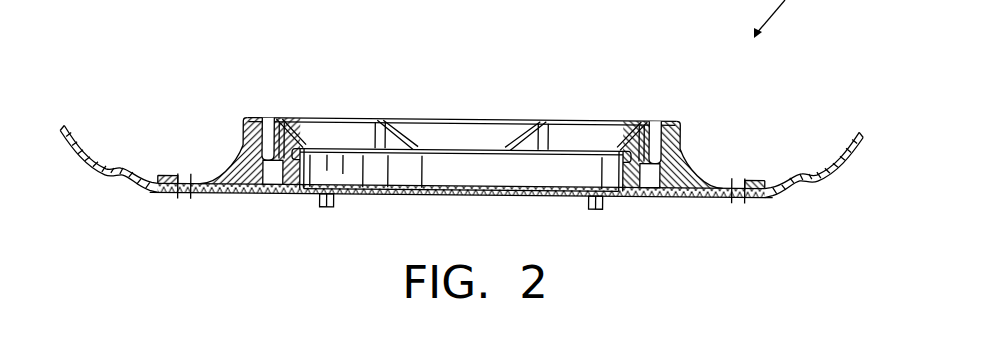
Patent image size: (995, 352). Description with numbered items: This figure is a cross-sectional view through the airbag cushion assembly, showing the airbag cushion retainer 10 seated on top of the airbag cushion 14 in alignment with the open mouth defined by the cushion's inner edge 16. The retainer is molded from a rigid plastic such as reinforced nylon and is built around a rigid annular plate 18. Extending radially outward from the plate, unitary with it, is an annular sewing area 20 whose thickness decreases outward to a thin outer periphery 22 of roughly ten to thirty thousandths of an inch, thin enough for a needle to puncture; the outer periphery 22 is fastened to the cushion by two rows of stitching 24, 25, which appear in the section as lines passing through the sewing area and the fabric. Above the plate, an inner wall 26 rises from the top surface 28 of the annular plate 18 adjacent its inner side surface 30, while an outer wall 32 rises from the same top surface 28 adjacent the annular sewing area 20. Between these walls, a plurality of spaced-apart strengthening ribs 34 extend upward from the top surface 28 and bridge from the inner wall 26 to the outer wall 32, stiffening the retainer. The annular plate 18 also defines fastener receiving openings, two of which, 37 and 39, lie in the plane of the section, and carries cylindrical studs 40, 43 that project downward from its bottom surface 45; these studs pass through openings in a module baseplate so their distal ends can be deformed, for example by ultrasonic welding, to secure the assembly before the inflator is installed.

The airbag cushion retainer 10 is at (566, 112).
The airbag cushion 14 is at (117, 186).
The inner edge 16 is at (302, 196).
The annular plate 18 is at (261, 150).
The annular sewing area 20 is at (238, 172).
The outer periphery 22 is at (164, 177).
The row of stitching 24 is at (192, 196).
The row of stitching 25 is at (178, 198).
The inner wall 26 is at (301, 148).
The top surface 28 is at (283, 126).
The inner side surface 30 is at (617, 178).
The outer wall 32 is at (243, 119).
The strengthening ribs 34 is at (277, 125).
The fastener receiving opening 37 is at (641, 190).
The fastener receiving opening 39 is at (265, 192).
The cylindrical stud 40 is at (589, 208).
The cylindrical stud 43 is at (329, 208).
The bottom surface 45 is at (619, 196).